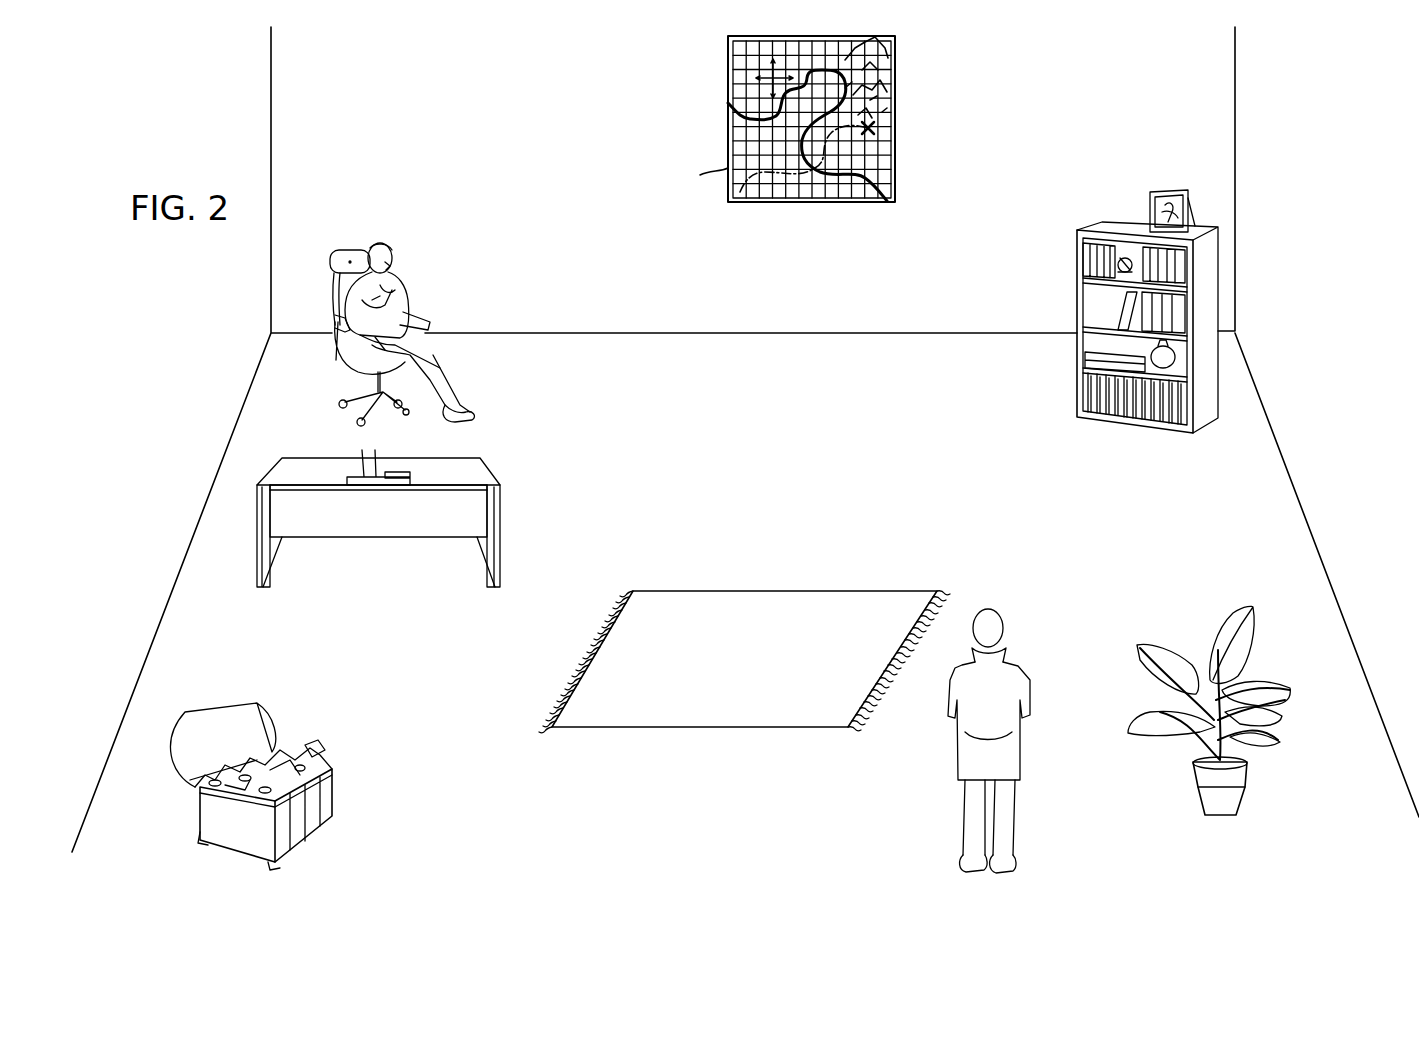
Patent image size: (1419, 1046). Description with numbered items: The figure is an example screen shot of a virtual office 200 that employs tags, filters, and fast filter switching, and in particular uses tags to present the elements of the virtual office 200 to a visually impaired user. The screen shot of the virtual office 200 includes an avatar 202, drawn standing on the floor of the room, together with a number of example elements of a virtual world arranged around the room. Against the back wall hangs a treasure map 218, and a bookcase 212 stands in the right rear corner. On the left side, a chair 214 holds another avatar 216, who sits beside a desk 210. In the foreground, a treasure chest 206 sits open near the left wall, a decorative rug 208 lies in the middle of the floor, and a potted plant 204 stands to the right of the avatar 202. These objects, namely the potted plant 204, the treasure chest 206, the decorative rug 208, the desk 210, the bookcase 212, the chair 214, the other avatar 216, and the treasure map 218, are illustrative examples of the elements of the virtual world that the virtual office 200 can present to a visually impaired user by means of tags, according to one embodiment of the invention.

The virtual office 200 is at (485, 107).
The avatar 202 is at (1022, 660).
The potted plant 204 is at (1137, 647).
The treasure chest 206 is at (297, 740).
The decorative rug 208 is at (688, 720).
The desk 210 is at (330, 525).
The bookcase 212 is at (1075, 270).
The chair 214 is at (347, 248).
The another avatar 216 is at (438, 362).
The treasure map 218 is at (731, 160).